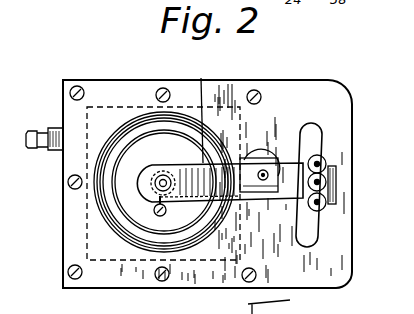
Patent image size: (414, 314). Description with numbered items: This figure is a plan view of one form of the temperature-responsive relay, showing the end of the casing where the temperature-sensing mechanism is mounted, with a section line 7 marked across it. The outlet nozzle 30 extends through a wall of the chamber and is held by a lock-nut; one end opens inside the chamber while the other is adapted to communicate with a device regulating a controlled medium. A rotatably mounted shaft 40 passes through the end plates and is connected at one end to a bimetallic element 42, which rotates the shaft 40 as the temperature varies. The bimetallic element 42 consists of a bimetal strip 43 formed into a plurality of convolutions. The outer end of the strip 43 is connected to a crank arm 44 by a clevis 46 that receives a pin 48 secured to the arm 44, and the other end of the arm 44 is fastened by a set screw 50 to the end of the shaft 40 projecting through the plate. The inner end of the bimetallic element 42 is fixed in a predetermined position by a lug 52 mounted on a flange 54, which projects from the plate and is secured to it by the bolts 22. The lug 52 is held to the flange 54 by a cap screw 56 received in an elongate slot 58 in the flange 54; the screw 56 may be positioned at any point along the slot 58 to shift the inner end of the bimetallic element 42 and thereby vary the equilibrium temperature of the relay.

The section line 7- 7 is at (60, 111).
The screws 22 is at (254, 90).
The outlet nozzle 30 is at (38, 149).
The rotatably mounted shaft 40 is at (156, 174).
The bimetallic element 42 is at (132, 112).
The bimetal strip 43 is at (100, 195).
The crank arm 44 is at (178, 162).
The clevis 46 is at (273, 163).
The pin 48 is at (275, 199).
The set screw 50 is at (157, 210).
The lug 52 is at (199, 111).
The flange 54 is at (299, 90).
The cap screw 56 is at (320, 182).
The elongate slot 58 is at (318, 224).